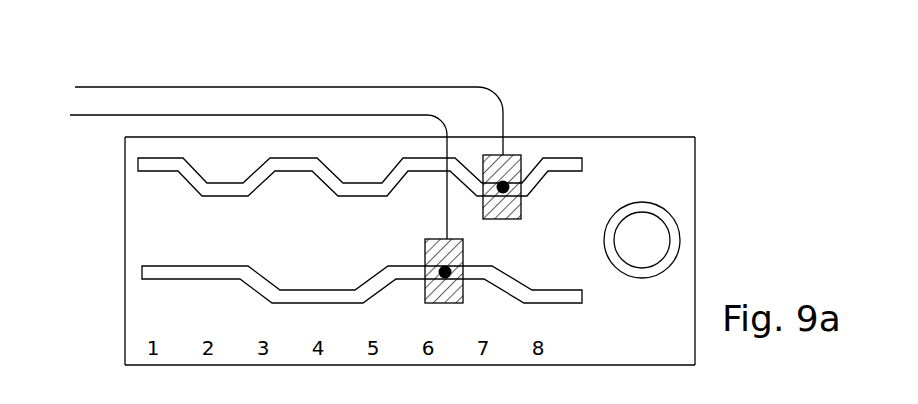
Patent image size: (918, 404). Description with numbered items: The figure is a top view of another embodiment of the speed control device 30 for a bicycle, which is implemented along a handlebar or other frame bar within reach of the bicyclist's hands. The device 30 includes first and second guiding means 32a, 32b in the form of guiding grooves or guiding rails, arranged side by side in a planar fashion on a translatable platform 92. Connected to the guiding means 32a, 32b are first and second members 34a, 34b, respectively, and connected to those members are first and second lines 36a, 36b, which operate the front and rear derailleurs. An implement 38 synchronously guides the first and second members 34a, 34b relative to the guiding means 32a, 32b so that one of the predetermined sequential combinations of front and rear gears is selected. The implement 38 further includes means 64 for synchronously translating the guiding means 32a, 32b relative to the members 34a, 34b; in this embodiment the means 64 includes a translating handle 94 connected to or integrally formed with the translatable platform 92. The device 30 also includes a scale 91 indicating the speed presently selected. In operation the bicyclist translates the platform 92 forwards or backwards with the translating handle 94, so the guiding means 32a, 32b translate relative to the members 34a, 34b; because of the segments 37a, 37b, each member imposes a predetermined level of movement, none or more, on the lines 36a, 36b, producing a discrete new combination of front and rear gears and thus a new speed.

The speed control device 30 is at (726, 123).
The first guiding means 32a is at (165, 172).
The second guiding means 32b is at (205, 280).
The first member 34a is at (512, 155).
The second member 34b is at (445, 303).
The first line 36a is at (170, 70).
The second line 36b is at (118, 113).
The segments 37a is at (353, 182).
The segments 37b is at (413, 278).
The implement 38 is at (518, 115).
The means for synchronously translating 64 is at (725, 240).
The translating handle 94 is at (651, 240).
The scale 91 is at (120, 383).
The translatable platform 92 is at (650, 332).